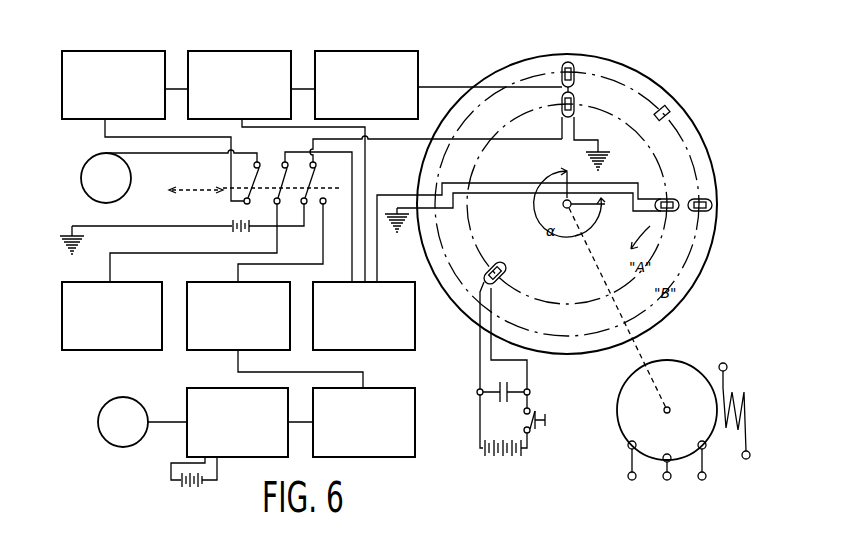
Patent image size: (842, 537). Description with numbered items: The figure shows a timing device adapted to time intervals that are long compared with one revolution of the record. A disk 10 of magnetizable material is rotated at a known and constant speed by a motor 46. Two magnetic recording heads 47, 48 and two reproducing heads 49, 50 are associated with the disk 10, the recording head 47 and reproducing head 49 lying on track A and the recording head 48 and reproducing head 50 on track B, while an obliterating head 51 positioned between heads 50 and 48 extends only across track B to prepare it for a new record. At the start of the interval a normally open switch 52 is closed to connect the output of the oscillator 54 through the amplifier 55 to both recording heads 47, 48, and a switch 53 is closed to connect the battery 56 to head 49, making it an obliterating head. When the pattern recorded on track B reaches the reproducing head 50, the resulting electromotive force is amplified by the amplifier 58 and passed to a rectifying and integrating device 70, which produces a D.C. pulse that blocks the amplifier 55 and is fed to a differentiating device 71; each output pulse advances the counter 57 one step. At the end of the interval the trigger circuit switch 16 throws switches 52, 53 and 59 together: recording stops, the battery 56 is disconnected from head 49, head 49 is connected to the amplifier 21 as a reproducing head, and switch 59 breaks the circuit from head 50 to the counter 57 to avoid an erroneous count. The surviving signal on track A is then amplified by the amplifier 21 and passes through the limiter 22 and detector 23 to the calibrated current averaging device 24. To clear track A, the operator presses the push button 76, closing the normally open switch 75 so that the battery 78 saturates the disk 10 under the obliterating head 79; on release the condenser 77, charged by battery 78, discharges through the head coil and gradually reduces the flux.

The disk 10 is at (713, 260).
The trigger circuit switch 16 is at (186, 190).
The amplifier 21 is at (203, 350).
The limiter 22 is at (392, 457).
The detector 23 is at (186, 401).
The calibrated current averaging device 24 is at (102, 433).
The motor 46 is at (663, 360).
The magnetic recording head 47 is at (672, 198).
The magnetic recording head 48 is at (702, 197).
The reproducing head 49 is at (576, 104).
The reproducing head 50 is at (576, 72).
The obliterating head 51 is at (668, 110).
The switch 52 is at (286, 181).
The switch 53 is at (314, 181).
The oscillator 54 is at (72, 350).
The amplifier 55 is at (385, 350).
The battery 56 is at (225, 224).
The counter 57 is at (85, 191).
The amplifier 58 is at (388, 51).
The switch 59 is at (257, 181).
The rectifying and integrating device 70 is at (262, 51).
The differentiating device 71 is at (135, 51).
The switch 75 is at (530, 432).
The push button 76 is at (546, 418).
The condenser 77 is at (508, 388).
The battery 78 is at (514, 457).
The obliterating head 79 is at (505, 268).